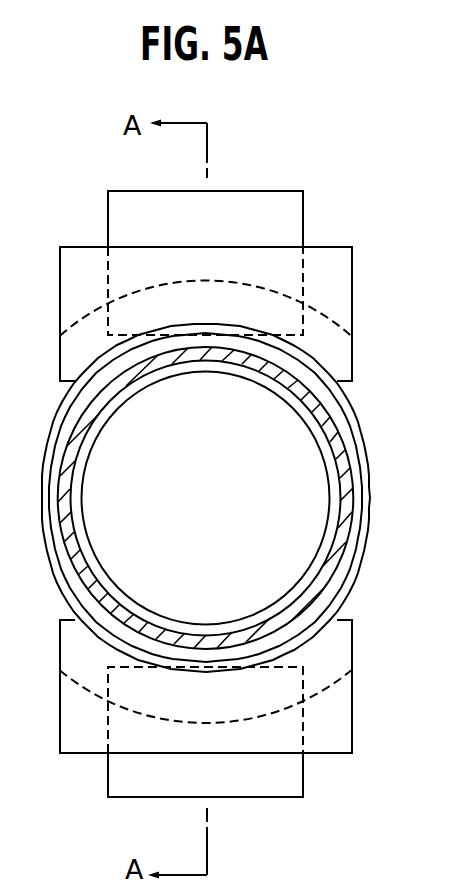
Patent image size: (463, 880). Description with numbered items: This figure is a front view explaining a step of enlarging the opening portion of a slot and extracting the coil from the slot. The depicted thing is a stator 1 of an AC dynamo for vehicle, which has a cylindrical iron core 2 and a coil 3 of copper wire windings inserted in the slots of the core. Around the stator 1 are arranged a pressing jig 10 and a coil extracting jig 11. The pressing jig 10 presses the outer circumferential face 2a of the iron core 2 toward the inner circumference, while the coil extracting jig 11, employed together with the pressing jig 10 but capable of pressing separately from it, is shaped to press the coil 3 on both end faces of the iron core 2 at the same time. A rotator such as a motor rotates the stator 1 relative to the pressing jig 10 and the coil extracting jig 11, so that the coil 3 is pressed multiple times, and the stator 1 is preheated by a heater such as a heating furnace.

The stator 1 is at (374, 556).
The iron core 2 is at (362, 528).
The outer circumferential face 2a is at (355, 427).
The coil 3 is at (347, 488).
The pressing jig 10 is at (295, 221).
The coil extracting jig 11 is at (342, 293).